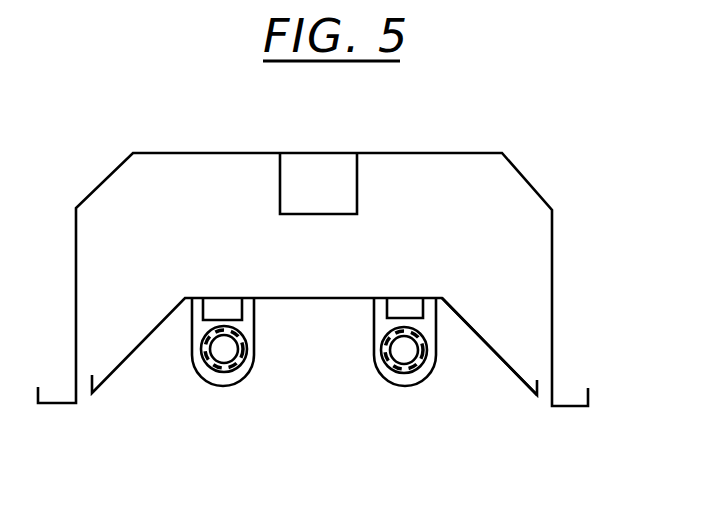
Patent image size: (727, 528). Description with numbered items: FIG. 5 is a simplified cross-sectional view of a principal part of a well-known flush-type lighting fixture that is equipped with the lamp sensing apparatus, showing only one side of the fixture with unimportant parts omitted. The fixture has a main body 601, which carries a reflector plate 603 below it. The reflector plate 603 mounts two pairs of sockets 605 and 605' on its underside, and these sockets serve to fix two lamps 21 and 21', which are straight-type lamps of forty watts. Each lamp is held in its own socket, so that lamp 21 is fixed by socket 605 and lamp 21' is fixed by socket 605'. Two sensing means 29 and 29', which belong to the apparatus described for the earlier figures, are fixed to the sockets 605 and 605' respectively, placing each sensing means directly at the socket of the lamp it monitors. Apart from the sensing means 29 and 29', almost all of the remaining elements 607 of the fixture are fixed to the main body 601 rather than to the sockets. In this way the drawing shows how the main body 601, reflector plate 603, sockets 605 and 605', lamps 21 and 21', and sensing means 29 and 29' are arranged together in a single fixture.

The main body 601 is at (450, 154).
The reflector plate 603 is at (495, 350).
The elements 607 is at (302, 164).
The lamp 21 is at (183, 366).
The lamp 21' is at (384, 379).
The sensing means 29 is at (259, 334).
The sensing means 29' is at (369, 318).
The socket 605 is at (237, 403).
The socket 605' is at (450, 380).